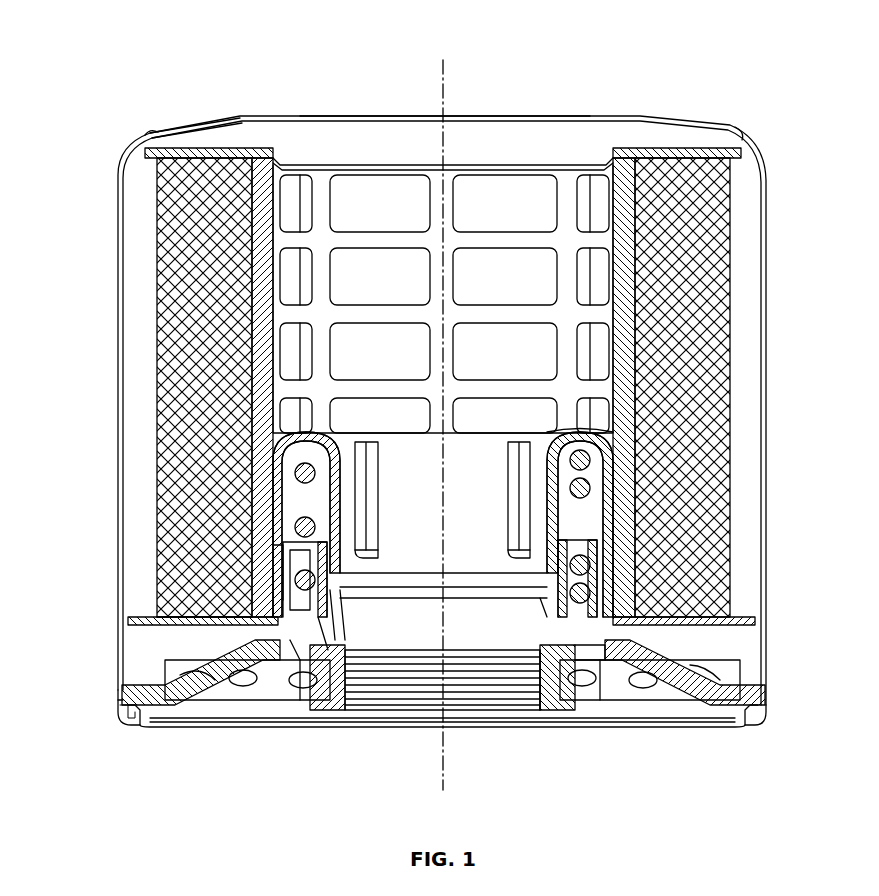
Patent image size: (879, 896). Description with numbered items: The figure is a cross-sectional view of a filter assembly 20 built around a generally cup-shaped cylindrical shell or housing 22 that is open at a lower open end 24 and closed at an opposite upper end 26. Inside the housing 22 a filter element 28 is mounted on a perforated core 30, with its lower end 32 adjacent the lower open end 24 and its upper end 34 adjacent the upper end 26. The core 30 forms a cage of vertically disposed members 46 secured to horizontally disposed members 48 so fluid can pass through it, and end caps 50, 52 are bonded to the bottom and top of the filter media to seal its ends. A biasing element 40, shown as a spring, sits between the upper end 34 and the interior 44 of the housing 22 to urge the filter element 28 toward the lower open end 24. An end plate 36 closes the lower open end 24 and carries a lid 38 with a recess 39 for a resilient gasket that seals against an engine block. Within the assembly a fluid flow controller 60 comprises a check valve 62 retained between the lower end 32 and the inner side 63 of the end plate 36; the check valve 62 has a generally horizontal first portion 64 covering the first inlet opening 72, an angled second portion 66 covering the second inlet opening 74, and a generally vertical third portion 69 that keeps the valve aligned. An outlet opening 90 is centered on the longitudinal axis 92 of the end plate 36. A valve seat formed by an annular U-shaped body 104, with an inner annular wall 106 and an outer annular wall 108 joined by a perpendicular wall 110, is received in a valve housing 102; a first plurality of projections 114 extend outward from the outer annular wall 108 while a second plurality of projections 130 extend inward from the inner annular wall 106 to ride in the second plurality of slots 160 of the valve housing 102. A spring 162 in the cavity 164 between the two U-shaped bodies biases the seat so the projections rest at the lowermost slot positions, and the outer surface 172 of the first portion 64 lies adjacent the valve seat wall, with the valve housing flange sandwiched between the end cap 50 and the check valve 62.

The filter assembly 20 is at (118, 40).
The housing 22 is at (425, 115).
The lower open end 24 is at (118, 700).
The upper end 26 is at (160, 155).
The filter element 28 is at (145, 380).
The core 30 is at (630, 250).
The lower end 32 is at (165, 590).
The upper end 34 is at (175, 165).
The end plate 36 is at (162, 722).
The lid 38 is at (232, 720).
The recess 39 is at (142, 722).
The biasing element 40 is at (200, 132).
The interior 44 is at (380, 125).
The vertically disposed members 46 is at (340, 185).
The horizontally disposed members 48 is at (395, 232).
The end cap 50 is at (130, 626).
The end cap 52 is at (150, 135).
The fluid flow controller 60 is at (520, 640).
The check valve 62 is at (575, 660).
The inner side 63 is at (605, 650).
The first portion 64 is at (545, 700).
The second portion 66 is at (700, 665).
The third portion 69 is at (540, 620).
The first inlet opening 72 is at (292, 688).
The second inlet opening 74 is at (300, 690).
The outlet opening 90 is at (412, 755).
The longitudinal axis 92 is at (440, 495).
The valve housing 102 is at (615, 433).
The U-shaped body 104 is at (325, 650).
The inner annular wall 106 is at (283, 578).
The outer annular wall 108 is at (335, 592).
The wall 110 is at (296, 700).
The first plurality of projections 114 is at (287, 545).
The second plurality of projections 130 is at (372, 555).
The second plurality of slots 160 is at (376, 507).
The spring 162 is at (590, 462).
The cavity 164 is at (295, 492).
The outer surface 172 is at (272, 600).